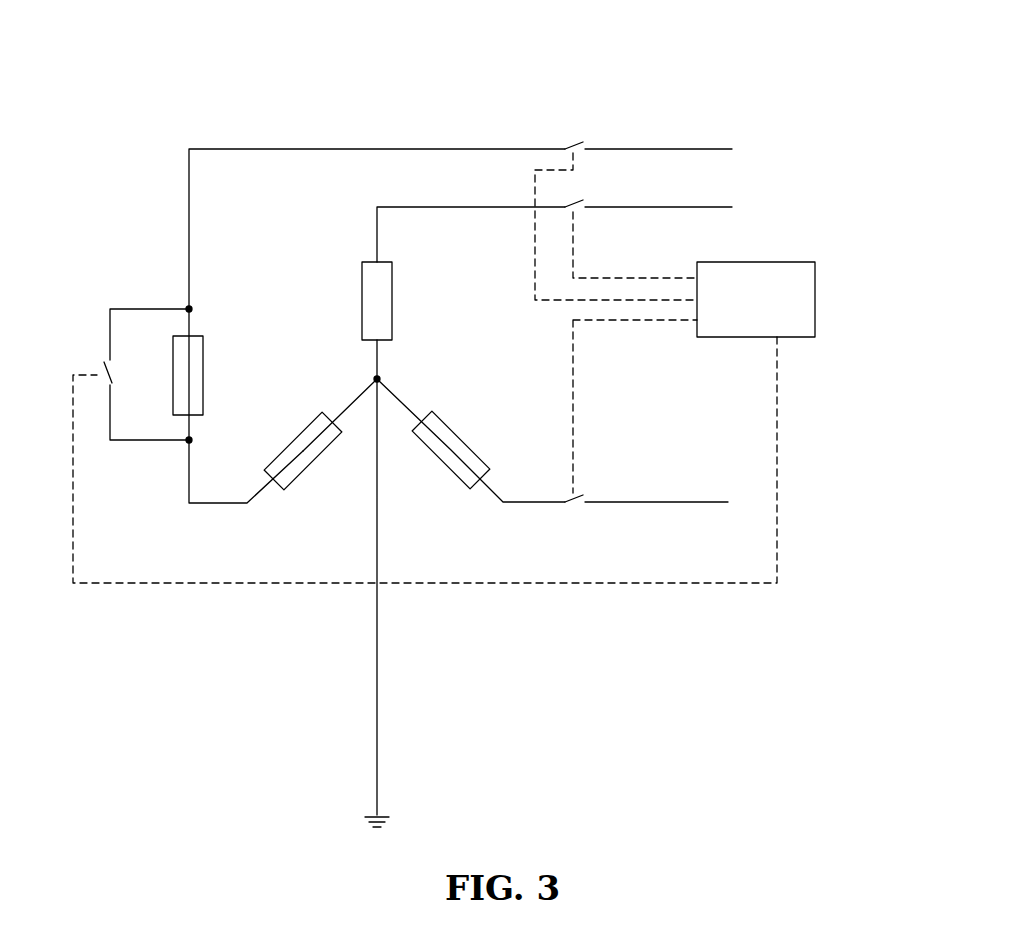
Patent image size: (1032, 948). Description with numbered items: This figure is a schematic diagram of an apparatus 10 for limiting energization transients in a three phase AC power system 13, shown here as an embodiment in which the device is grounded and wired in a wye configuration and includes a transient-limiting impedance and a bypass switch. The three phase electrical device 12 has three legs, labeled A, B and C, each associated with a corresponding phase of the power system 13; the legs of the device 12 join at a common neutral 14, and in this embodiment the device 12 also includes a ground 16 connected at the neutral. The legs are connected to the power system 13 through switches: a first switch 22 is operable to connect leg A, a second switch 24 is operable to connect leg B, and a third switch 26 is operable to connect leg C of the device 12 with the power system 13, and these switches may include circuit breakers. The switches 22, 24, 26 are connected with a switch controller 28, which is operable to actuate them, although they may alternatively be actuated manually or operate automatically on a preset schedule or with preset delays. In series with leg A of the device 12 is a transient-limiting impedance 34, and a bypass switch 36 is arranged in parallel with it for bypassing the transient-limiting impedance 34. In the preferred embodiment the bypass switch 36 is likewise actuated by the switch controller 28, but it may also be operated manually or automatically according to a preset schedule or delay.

The apparatus 10 is at (684, 64).
The three phase electrical device 12 is at (438, 348).
The three phase AC power system 13 is at (748, 493).
The common neutral 14 is at (375, 377).
The ground 16 is at (380, 813).
The first switch 22 is at (583, 133).
The second switch 24 is at (583, 193).
The third switch 26 is at (583, 486).
The switch controller 28 is at (746, 326).
The transient-limiting impedance 34 is at (204, 378).
The bypass switch 36 is at (117, 372).